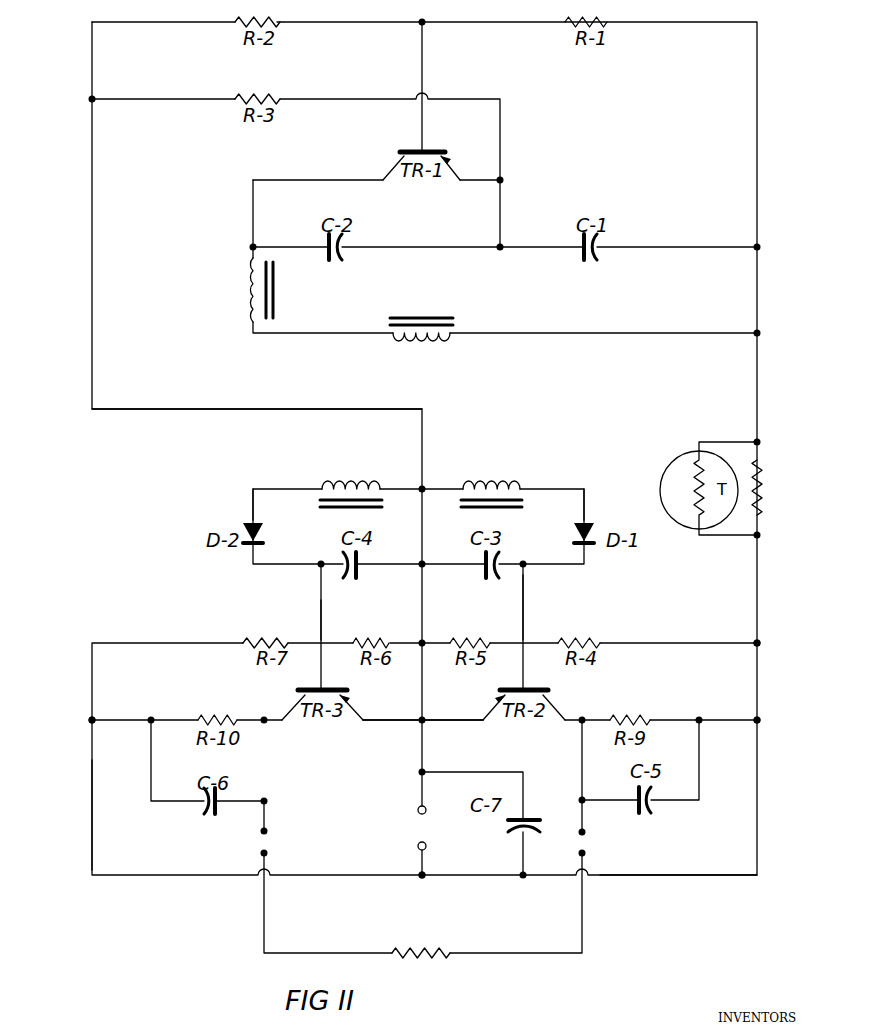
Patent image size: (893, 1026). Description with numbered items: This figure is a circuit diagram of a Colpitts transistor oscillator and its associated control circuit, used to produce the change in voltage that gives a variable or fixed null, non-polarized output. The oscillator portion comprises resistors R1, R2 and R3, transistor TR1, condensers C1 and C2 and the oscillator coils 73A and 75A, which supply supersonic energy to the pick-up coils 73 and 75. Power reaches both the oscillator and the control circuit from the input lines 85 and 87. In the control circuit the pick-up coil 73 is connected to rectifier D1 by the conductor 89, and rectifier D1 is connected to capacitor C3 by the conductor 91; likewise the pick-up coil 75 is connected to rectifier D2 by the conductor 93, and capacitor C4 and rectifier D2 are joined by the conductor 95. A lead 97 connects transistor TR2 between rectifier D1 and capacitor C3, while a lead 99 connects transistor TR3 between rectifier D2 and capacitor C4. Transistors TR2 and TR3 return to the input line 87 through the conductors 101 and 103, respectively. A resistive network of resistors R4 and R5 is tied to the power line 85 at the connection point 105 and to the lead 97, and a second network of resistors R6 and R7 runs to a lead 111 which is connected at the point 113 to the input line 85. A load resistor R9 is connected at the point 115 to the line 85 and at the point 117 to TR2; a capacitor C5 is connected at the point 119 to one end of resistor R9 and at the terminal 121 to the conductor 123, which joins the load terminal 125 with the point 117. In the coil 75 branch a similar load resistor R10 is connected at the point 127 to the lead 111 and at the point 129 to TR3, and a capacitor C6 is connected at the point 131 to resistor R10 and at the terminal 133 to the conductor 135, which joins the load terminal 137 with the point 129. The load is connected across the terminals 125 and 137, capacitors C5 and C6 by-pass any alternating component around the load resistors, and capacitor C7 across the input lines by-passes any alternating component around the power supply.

The oscillator coil 75A is at (248, 270).
The oscillator coil 73A is at (450, 337).
The pick-up coil 75 is at (331, 484).
The pick-up coil 73 is at (513, 484).
The input line 87 is at (237, 411).
The conductor 93 is at (252, 490).
The conductor 89 is at (587, 492).
The conductor 91 is at (513, 565).
The conductor 95 is at (337, 569).
The lead 97 is at (527, 593).
The lead 99 is at (322, 621).
The connection point 105 is at (761, 641).
The connection point 115 is at (762, 719).
The connection point 119 is at (698, 718).
The connection point 127 is at (92, 720).
The connection point 131 is at (151, 718).
The connection point 129 is at (264, 718).
The conductor 103 is at (393, 722).
The conductor 101 is at (459, 734).
The connection point 117 is at (580, 721).
The lead 111 is at (92, 826).
The terminal 133 is at (268, 799).
The conductor 135 is at (263, 831).
The load terminal 137 is at (259, 849).
The terminal 121 is at (580, 800).
The conductor 123 is at (589, 813).
The load terminal 125 is at (580, 848).
The connection point 113 is at (426, 877).
The input line 85 is at (764, 875).